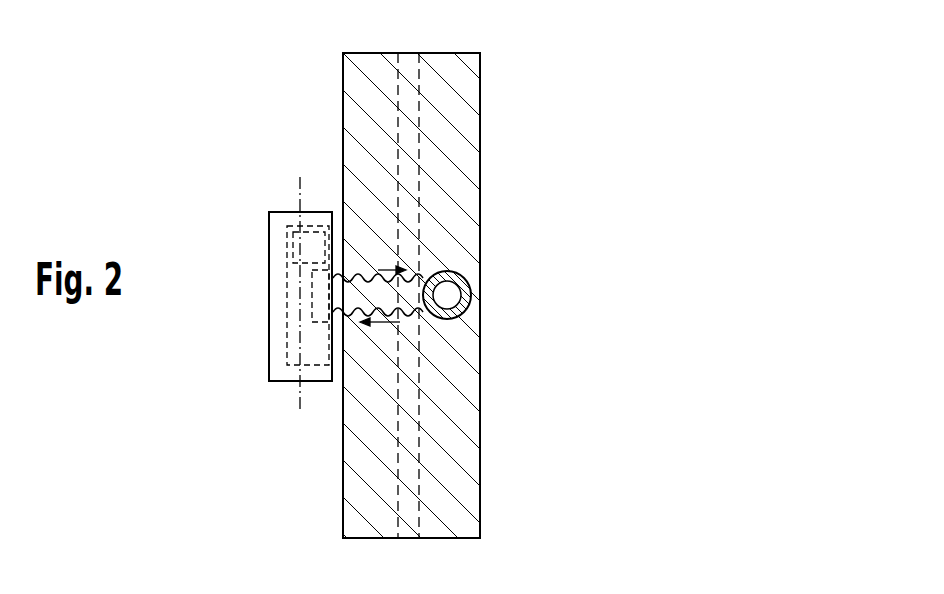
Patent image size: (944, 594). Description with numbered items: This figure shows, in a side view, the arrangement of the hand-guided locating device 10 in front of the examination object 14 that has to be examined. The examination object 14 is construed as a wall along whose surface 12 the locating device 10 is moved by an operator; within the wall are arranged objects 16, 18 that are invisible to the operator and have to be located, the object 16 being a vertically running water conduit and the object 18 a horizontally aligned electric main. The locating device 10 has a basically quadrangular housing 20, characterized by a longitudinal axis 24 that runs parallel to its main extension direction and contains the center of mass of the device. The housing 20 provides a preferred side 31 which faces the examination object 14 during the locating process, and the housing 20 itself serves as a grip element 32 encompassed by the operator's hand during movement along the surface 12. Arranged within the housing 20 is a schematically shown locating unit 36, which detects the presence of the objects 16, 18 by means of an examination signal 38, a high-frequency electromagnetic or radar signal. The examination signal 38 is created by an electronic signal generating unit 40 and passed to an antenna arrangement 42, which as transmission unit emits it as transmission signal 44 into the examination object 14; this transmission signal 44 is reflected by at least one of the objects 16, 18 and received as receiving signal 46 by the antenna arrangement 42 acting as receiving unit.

The locating device 10 is at (268, 186).
The surface 12 is at (343, 82).
The examination object 14 is at (503, 76).
The object 16 is at (419, 158).
The object 18 is at (471, 294).
The housing 20 is at (287, 220).
The longitudinal axis 24 is at (300, 410).
The preferred side 31 is at (333, 352).
The grip element 32 is at (250, 342).
The locating unit 36 is at (275, 366).
The examination signal 38 is at (424, 262).
The signal generating unit 40 is at (307, 250).
The antenna arrangement 42 is at (294, 287).
The transmission signal 44 is at (318, 302).
The receiving signal 46 is at (420, 312).